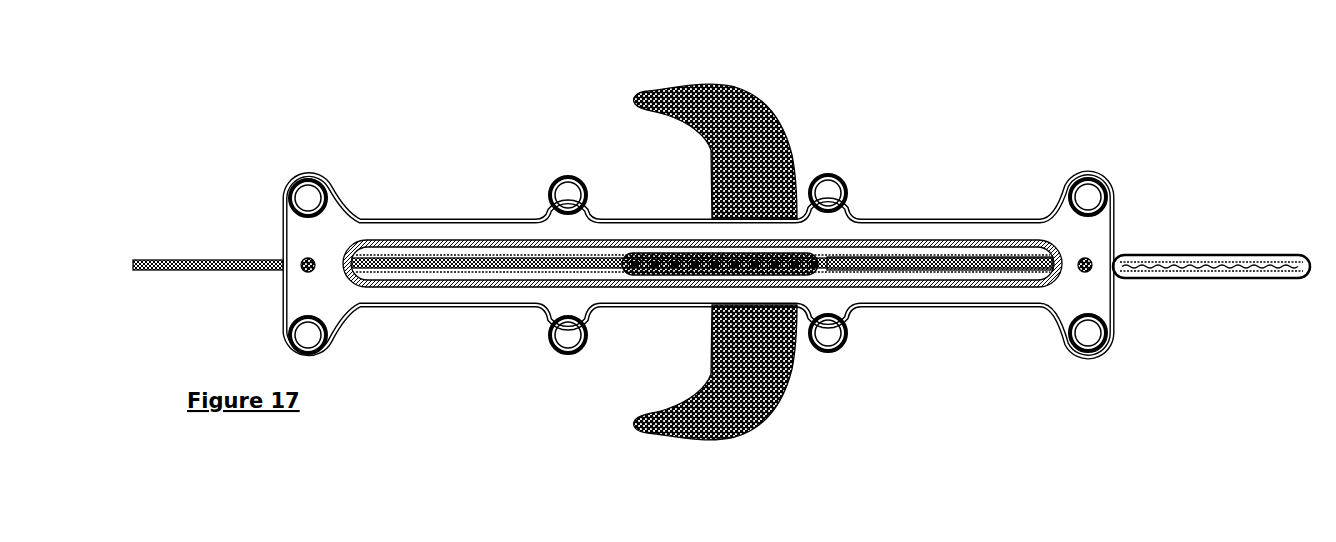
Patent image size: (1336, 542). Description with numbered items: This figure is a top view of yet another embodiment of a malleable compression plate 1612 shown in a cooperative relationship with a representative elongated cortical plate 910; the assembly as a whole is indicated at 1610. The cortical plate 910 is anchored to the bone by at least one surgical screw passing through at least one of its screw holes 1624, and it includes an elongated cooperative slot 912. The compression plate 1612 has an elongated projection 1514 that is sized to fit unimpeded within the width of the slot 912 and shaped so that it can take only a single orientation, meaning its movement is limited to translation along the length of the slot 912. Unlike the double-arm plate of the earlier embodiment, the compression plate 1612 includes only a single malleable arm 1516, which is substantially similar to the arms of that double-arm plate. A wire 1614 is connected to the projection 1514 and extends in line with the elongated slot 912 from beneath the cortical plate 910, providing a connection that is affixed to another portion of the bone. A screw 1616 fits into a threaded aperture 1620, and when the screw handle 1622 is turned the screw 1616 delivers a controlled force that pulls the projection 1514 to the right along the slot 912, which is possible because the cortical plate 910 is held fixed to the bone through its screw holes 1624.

The lead assembly 1610 is at (232, 119).
The cortical plate 910 is at (428, 220).
The elongated slot 912 is at (457, 328).
The elongated projection 1514 is at (640, 252).
The malleable compression plate 1612 is at (785, 122).
The arm 1516 is at (778, 407).
The wire 1614 is at (200, 260).
The screw 1616 is at (967, 259).
The threaded aperture 1620 is at (827, 256).
The screw handle 1622 is at (1260, 255).
The screw holes 1624 is at (832, 333).